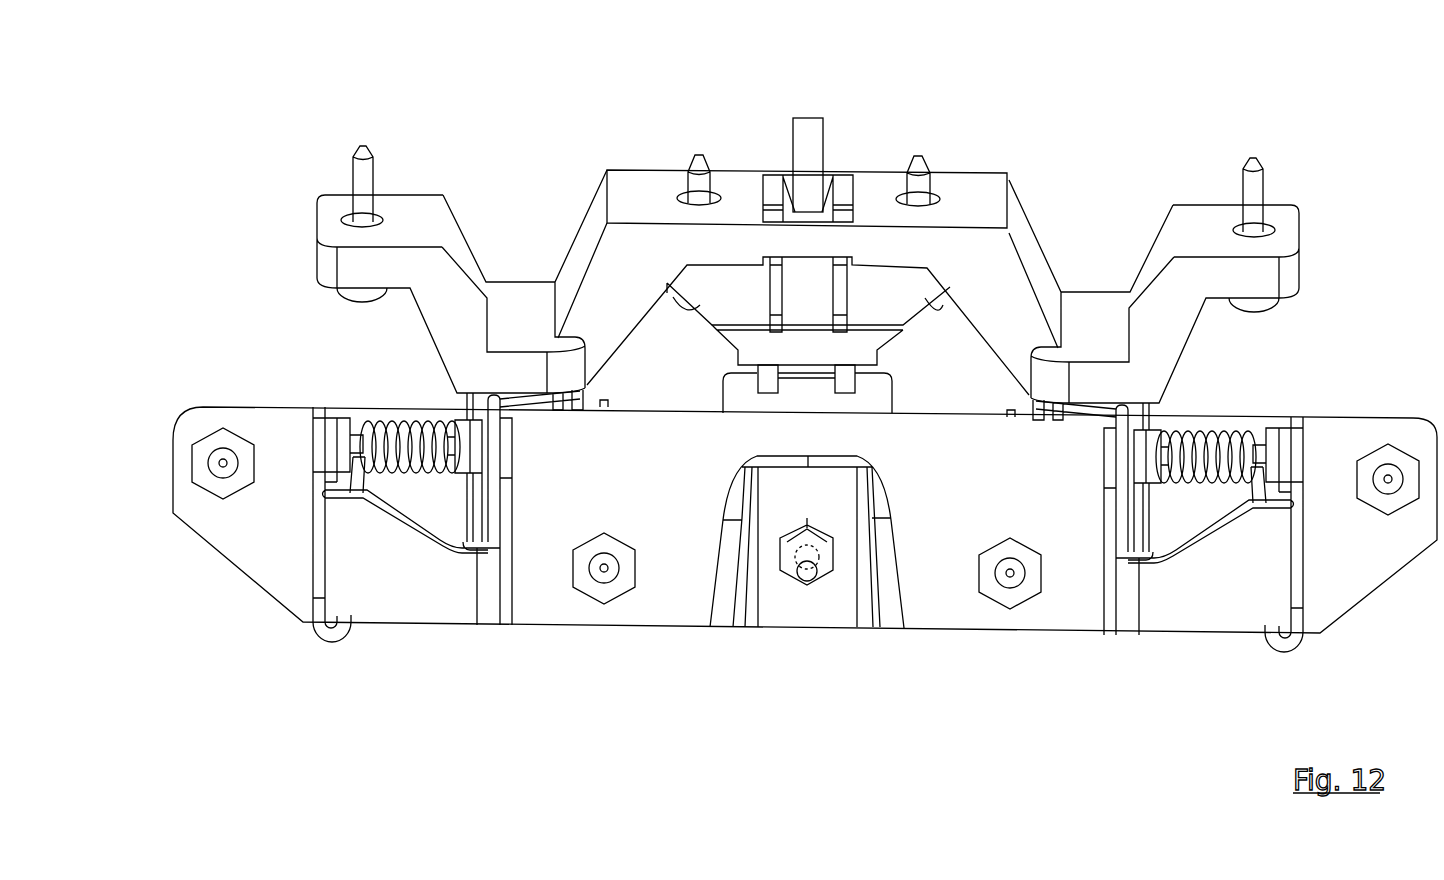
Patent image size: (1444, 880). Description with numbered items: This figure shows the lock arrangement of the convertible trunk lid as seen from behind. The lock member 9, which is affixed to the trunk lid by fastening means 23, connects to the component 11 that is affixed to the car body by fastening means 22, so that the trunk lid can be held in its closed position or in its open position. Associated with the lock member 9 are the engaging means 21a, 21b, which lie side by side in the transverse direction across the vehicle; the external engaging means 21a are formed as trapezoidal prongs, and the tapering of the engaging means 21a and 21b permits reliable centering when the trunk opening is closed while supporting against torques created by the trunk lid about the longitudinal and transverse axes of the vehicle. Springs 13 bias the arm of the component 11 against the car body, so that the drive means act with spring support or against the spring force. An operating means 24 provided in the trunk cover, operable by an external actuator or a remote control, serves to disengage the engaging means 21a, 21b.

The lock member 9 is at (1032, 255).
The component 11 is at (651, 477).
The springs 13 is at (405, 438).
The external engaging means 21a is at (533, 402).
The engaging means 21b is at (767, 385).
The fastening means 22 is at (240, 472).
The fastening means 23 is at (368, 176).
The operating means 24 is at (807, 152).